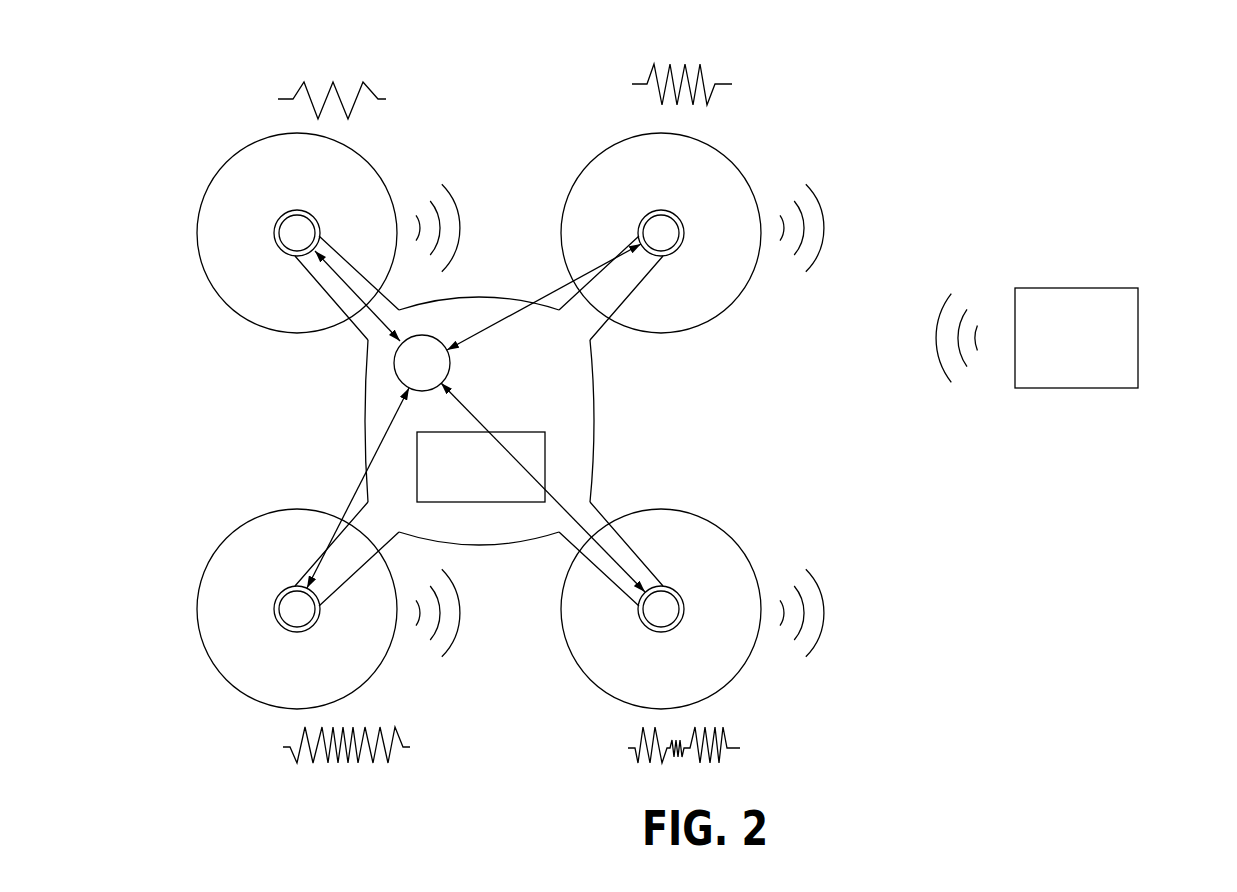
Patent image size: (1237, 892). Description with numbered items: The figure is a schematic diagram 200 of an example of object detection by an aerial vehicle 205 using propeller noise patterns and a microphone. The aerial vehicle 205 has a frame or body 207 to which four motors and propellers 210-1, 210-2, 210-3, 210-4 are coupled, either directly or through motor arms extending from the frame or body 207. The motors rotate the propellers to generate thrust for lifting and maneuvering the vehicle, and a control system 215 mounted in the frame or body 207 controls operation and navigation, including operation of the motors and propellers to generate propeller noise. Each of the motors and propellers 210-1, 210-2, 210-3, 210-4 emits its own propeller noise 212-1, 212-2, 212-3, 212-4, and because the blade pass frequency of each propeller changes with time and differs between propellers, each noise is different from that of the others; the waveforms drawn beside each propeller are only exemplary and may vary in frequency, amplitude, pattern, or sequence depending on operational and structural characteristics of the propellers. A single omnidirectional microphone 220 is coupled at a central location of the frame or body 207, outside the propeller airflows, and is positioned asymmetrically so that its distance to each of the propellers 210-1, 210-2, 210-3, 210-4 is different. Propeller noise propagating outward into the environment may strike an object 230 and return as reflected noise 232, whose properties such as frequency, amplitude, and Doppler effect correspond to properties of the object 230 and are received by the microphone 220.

The schematic diagram 200 is at (1140, 75).
The aerial vehicle 205 is at (198, 102).
The frame or body 207 is at (591, 388).
The motor and propeller 210-1 is at (630, 191).
The motor and propeller 210-2 is at (632, 674).
The motor and propeller 210-3 is at (268, 674).
The motor and propeller 210-4 is at (267, 191).
The propeller noise 212-1 is at (813, 202).
The propeller noise 212-2 is at (815, 588).
The propeller noise 212-3 is at (455, 635).
The propeller noise 212-4 is at (455, 202).
The control system 215 is at (463, 479).
The microphone 220 is at (405, 374).
The object 230 is at (1059, 349).
The reflected noise 232 is at (940, 360).